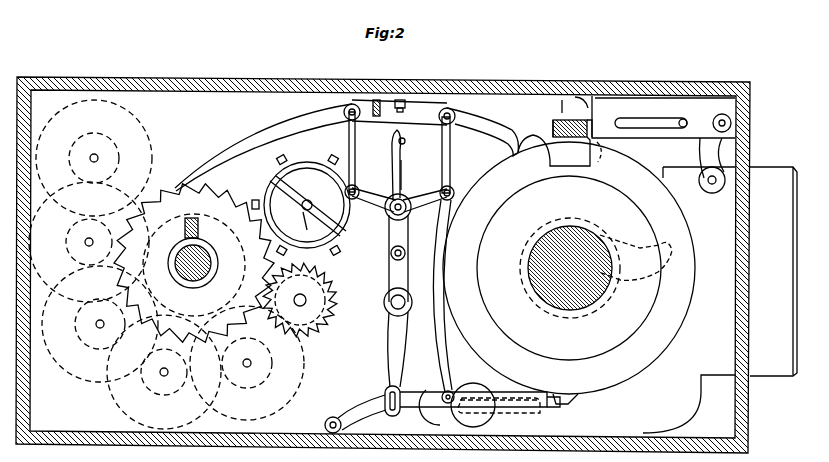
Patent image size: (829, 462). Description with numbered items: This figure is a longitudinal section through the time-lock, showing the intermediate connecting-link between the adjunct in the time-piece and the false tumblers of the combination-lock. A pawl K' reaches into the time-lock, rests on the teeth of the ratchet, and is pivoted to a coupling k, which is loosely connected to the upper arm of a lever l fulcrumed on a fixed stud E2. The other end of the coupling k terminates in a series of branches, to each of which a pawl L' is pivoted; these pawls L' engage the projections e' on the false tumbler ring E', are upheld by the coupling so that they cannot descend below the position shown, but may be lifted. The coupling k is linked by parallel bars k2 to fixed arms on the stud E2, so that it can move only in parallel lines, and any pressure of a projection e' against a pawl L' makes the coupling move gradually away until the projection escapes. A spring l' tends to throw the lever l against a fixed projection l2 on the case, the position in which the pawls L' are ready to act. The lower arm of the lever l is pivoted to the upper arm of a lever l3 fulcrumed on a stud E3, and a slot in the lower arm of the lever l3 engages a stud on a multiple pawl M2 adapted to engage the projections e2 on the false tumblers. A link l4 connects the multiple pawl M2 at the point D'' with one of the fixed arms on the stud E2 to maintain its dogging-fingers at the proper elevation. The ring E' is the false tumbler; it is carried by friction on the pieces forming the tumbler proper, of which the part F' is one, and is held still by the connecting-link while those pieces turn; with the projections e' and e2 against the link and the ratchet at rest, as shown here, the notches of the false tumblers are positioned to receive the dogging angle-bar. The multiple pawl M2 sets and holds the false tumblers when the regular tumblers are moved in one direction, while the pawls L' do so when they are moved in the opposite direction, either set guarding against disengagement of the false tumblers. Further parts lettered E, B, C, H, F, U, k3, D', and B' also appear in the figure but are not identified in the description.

The type wheel E is at (94, 158).
The dashed wheels B is at (166, 283).
The ratchet gear C is at (194, 263).
The hub H is at (180, 263).
The shaft F is at (193, 263).
The key block U is at (198, 228).
The parallel bars k2 is at (368, 183).
The pawl K' is at (263, 145).
The coupling k is at (399, 112).
The stop block k3 is at (385, 107).
The fixed projection l2 is at (424, 96).
The pawl L' is at (482, 132).
The fixed stud E2 is at (392, 214).
The lever l is at (400, 163).
The spring l' is at (407, 175).
The lever l3 is at (398, 258).
The stud E3 is at (390, 308).
The multiple pawl M2 is at (362, 406).
The link connection point on multiple pawl D'' is at (473, 406).
The roller / housing D' is at (608, 300).
The link l4 is at (442, 296).
The ring (false tumbler) E' is at (589, 268).
The tumbler part F' is at (570, 268).
The pawl B' is at (635, 257).
The projection e' is at (559, 131).
The projection e2 is at (570, 405).